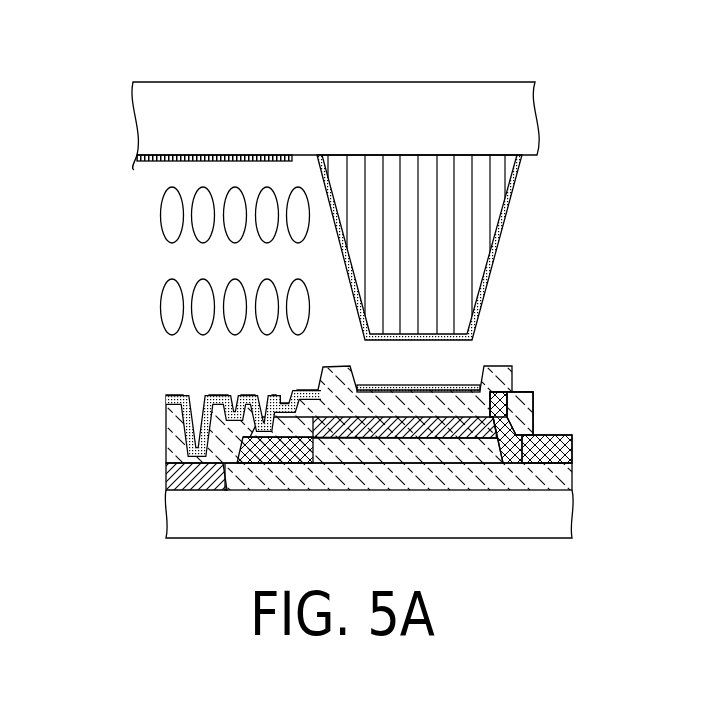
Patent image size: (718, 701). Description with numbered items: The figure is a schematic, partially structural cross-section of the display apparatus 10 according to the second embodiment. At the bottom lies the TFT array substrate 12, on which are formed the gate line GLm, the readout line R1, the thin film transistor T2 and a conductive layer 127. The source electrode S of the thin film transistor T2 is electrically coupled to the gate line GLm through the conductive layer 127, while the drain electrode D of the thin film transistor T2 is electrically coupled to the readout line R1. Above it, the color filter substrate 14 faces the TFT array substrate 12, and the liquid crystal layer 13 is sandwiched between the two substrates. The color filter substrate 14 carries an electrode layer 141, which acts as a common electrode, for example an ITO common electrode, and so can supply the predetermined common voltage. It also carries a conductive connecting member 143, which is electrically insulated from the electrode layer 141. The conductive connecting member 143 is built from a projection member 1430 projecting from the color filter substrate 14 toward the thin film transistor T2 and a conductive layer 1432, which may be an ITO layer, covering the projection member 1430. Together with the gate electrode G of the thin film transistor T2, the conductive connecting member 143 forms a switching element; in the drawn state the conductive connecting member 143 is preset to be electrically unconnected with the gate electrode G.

The display apparatus 10 is at (370, 48).
The color filter substrate 14 is at (555, 110).
The electrode layer 141 is at (150, 158).
The conductive connecting member 143 is at (487, 245).
The projection member 1430 is at (491, 214).
The conductive layer 1432 is at (497, 245).
The liquid crystal layer 13 is at (160, 256).
The conductive layer 127 is at (166, 397).
The source electrode S is at (240, 453).
The gate line GLm is at (166, 476).
The gate electrode G is at (465, 387).
The thin film transistor T2 is at (524, 381).
The drain electrode D is at (521, 419).
The readout line R1 is at (572, 443).
The TFT array substrate 12 is at (609, 503).